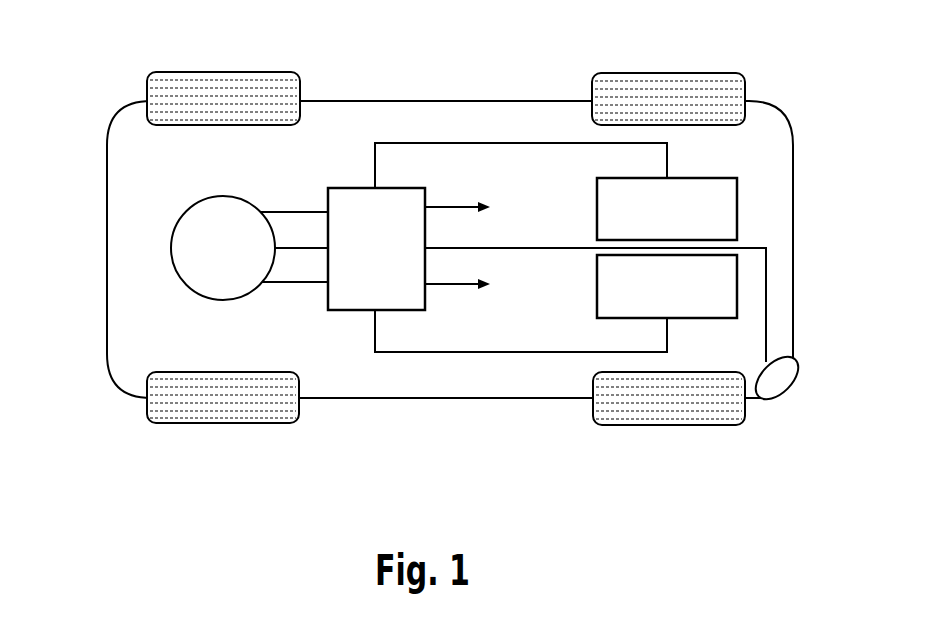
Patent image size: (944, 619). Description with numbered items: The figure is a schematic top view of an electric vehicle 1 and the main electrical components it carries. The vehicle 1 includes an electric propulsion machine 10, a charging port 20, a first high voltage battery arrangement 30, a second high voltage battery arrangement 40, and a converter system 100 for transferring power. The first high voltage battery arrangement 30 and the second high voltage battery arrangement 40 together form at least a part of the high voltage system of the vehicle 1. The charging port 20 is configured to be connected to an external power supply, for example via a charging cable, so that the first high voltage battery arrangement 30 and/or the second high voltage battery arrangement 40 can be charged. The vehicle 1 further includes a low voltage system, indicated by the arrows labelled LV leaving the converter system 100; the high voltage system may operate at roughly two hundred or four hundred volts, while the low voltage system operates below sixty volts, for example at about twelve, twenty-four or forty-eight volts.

The electric vehicle 1 is at (93, 96).
The electric propulsion machine 10 is at (187, 289).
The charging port 20 is at (787, 392).
The first high voltage battery arrangement 30 is at (737, 207).
The second high voltage battery arrangement 40 is at (735, 289).
The converter system 100 is at (360, 310).